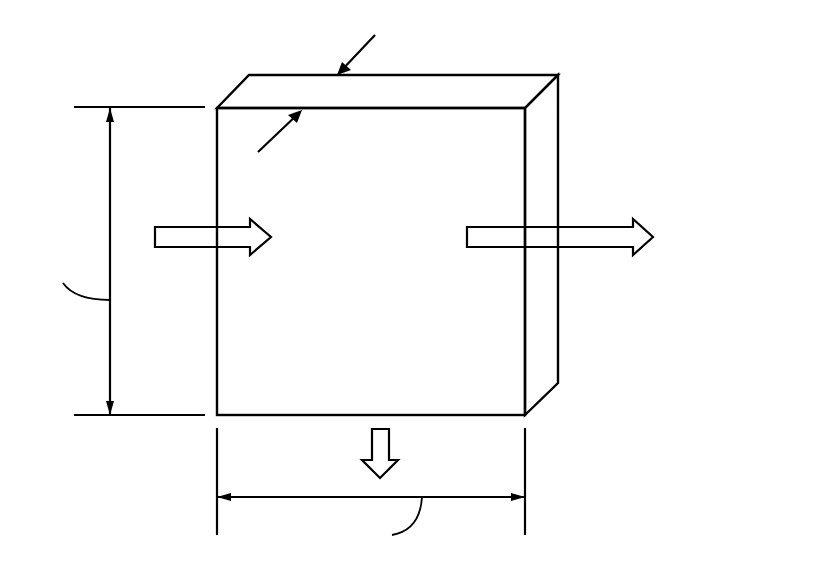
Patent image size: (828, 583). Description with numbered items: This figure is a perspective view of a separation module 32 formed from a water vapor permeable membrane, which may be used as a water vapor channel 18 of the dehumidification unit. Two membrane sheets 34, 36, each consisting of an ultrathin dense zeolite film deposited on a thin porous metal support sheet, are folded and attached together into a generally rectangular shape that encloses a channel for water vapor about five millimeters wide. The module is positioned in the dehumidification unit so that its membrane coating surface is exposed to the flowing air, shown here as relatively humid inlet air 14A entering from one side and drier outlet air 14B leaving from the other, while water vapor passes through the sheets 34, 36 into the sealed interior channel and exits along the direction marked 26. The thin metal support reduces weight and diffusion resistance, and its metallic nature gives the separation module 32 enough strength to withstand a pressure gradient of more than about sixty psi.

The separation module 32 is at (700, 56).
The water vapor channel 18 is at (490, 88).
The membrane sheet 36 is at (402, 75).
The membrane sheet 34 is at (490, 170).
The inlet air 14A is at (203, 235).
The outlet air 14B is at (583, 237).
The output force/displacement direction 26 is at (379, 452).